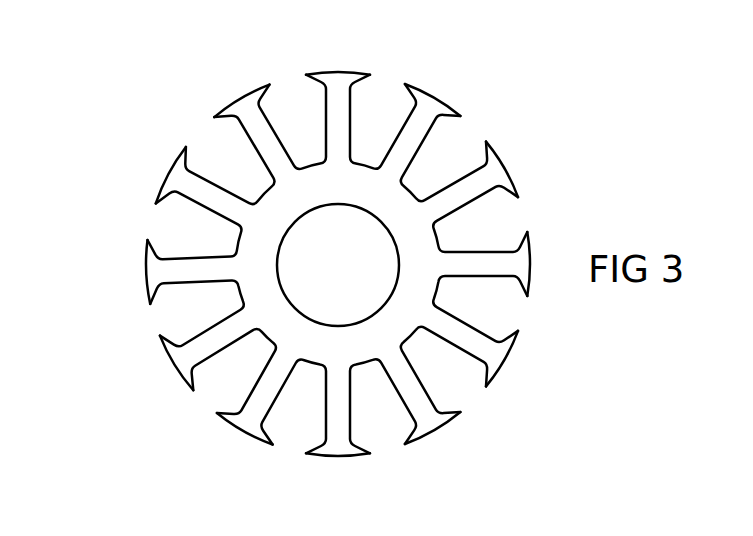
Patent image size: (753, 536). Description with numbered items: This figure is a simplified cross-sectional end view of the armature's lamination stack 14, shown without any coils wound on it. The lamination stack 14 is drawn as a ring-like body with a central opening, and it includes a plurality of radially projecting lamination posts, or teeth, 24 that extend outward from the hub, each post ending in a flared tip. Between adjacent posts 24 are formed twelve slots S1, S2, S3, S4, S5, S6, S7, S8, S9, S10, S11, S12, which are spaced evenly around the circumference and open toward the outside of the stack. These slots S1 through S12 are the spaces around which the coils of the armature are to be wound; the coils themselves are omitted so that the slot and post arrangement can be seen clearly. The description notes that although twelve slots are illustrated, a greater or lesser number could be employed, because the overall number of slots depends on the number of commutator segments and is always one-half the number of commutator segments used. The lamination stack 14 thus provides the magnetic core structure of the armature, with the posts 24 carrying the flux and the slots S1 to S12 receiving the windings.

The lamination stack 14 is at (315, 255).
The lamination posts 24 is at (340, 80).
The slot S1 is at (300, 108).
The slot S2 is at (383, 93).
The slot S3 is at (457, 137).
The slot S4 is at (500, 218).
The slot S5 is at (498, 308).
The slot S6 is at (457, 380).
The slot S7 is at (378, 413).
The slot S8 is at (295, 422).
The slot S9 is at (222, 380).
The slot S10 is at (180, 317).
The slot S11 is at (177, 230).
The slot S12 is at (222, 150).